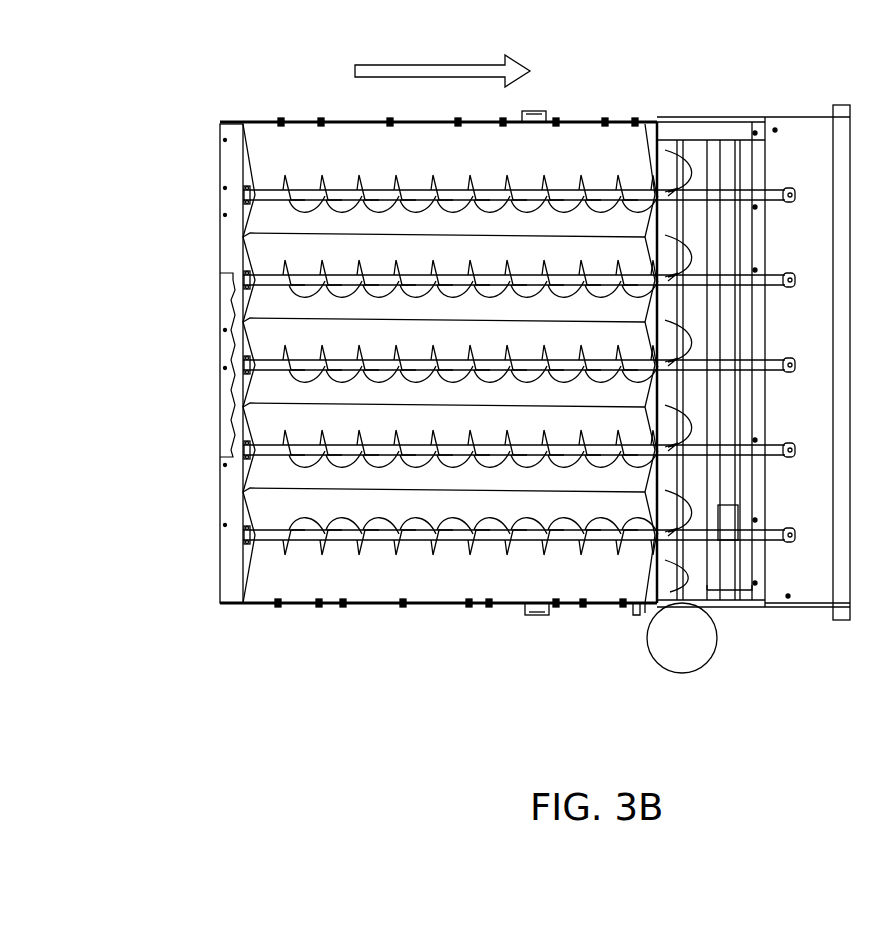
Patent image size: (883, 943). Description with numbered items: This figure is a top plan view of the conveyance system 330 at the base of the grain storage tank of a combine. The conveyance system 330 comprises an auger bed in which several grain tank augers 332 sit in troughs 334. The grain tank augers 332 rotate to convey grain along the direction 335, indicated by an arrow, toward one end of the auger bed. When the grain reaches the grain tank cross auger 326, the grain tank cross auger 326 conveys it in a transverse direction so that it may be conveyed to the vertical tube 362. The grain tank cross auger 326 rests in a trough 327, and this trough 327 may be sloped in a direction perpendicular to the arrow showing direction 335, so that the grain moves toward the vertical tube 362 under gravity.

The grain tank cross auger 326 is at (672, 165).
The trough 327 is at (712, 175).
The conveyance system 330 is at (380, 578).
The grain tank augers 332 is at (300, 283).
The troughs 334 is at (290, 482).
The direction 335 is at (442, 60).
The vertical tube 362 is at (688, 643).